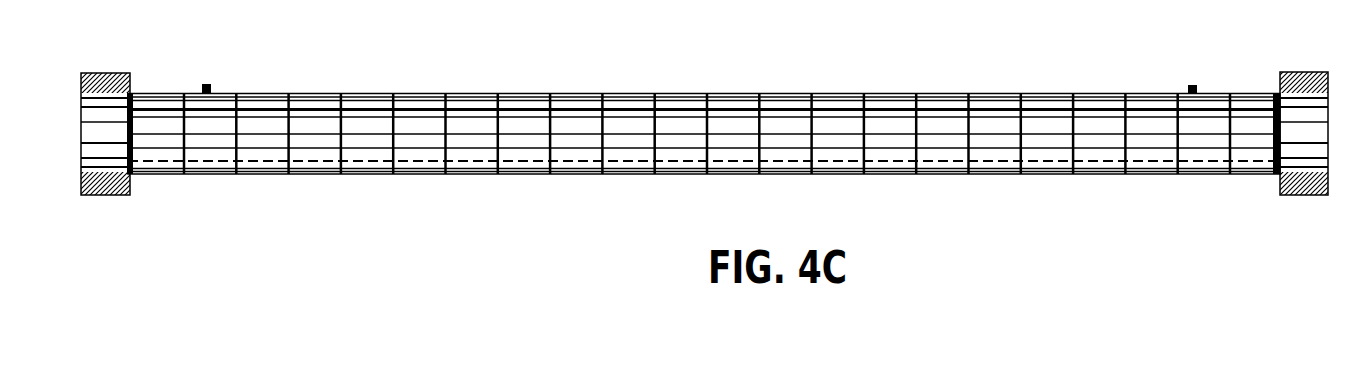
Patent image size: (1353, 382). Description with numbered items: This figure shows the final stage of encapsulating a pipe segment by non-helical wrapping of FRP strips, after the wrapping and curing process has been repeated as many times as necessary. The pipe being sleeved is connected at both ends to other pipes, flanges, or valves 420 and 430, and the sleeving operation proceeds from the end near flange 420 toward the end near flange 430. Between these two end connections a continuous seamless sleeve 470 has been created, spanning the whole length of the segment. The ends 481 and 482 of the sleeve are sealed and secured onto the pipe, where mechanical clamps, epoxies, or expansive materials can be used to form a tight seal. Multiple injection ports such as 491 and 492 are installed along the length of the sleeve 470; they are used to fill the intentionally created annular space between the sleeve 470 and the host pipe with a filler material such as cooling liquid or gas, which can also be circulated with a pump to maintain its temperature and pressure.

The flange 420 is at (97, 91).
The flange 430 is at (1307, 82).
The continuous seamless sleeve 470 is at (802, 110).
The end of the sleeve 481 is at (132, 92).
The end of the sleeve 482 is at (1277, 93).
The injection port 491 is at (213, 88).
The injection port 492 is at (1193, 87).